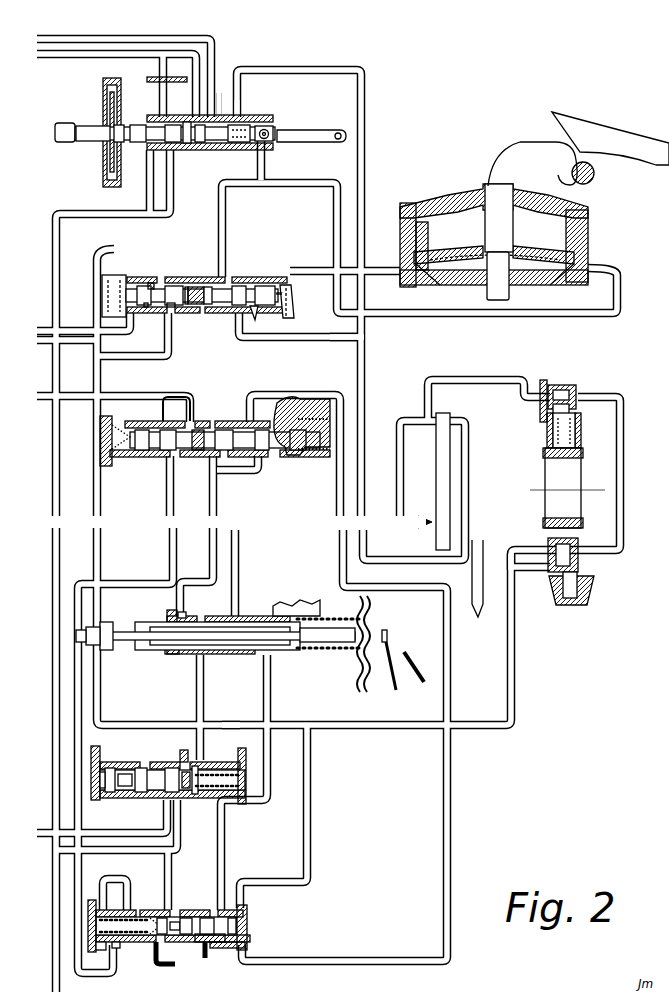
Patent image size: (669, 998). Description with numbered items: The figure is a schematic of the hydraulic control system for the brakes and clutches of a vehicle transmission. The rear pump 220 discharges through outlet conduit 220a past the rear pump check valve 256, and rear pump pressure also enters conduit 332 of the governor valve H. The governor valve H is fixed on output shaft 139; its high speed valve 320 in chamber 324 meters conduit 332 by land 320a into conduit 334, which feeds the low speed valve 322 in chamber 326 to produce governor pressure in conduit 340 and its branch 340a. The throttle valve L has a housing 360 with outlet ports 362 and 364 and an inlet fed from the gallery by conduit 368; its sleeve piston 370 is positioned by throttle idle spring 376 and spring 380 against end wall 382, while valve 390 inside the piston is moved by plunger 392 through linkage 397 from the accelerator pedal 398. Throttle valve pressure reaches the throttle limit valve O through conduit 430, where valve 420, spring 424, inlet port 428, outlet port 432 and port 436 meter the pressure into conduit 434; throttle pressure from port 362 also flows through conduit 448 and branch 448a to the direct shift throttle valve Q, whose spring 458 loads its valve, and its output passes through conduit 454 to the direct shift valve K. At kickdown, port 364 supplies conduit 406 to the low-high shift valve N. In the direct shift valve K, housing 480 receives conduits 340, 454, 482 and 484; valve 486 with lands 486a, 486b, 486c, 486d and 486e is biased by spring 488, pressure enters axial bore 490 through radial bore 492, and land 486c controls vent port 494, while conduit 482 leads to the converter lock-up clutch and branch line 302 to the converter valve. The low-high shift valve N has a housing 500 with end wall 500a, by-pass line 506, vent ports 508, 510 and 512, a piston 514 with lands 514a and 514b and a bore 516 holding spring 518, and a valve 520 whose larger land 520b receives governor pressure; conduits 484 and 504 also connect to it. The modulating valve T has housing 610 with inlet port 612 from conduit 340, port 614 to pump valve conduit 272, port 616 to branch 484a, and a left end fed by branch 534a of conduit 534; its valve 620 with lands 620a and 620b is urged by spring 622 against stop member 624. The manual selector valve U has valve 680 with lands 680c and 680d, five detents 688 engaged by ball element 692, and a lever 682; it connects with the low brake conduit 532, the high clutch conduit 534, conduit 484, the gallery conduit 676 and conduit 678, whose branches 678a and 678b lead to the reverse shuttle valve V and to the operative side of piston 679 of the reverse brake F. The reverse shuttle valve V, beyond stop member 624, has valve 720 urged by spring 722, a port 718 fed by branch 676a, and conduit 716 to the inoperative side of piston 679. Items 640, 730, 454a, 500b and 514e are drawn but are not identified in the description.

The low brake pressure conduit 532 is at (46, 36).
The high clutch pressure conduit 534 is at (90, 50).
The branch conduit 534a is at (82, 328).
The manual selector valve U is at (245, 90).
The gallery pressure conduit 676 is at (318, 72).
The branch conduit 676a is at (346, 338).
The valve 680 is at (56, 122).
The land 680c is at (188, 150).
The land 680d is at (232, 150).
The detents 688 is at (103, 112).
The plate 640 is at (152, 82).
The ball element 692 is at (104, 150).
The port 730 is at (196, 110).
The lever 682 is at (333, 138).
The conduit 678 is at (268, 166).
The branch conduit 678a is at (223, 206).
The branch conduit 678b is at (336, 204).
The low-high shift valve conduit 484 is at (172, 174).
The branch conduit 484a is at (150, 360).
The governor pressure conduit 340 is at (148, 199).
The branch conduit 340a is at (256, 882).
The reverse brake F is at (580, 216).
The piston 679 is at (575, 258).
The modulating valve T is at (140, 275).
The reverse shuttle valve V is at (243, 275).
The housing 610 is at (138, 286).
The inlet port 612 is at (152, 275).
The radial port 614 is at (172, 314).
The radial port 616 is at (188, 318).
The valve 620 is at (112, 290).
The land 620a is at (150, 308).
The land 620b is at (176, 284).
The spring 622 is at (200, 314).
The stop member 624 is at (205, 312).
The conduit 716 is at (296, 270).
The radial port 718 is at (254, 314).
The valve 720 is at (245, 284).
The spring 722 is at (288, 286).
The pump valve conduit 272 is at (92, 343).
The throttle limit valve O is at (143, 410).
The direct shift throttle valve Q is at (283, 405).
The valve 420 is at (150, 458).
The spring 424 is at (108, 462).
The inlet port 428 is at (170, 458).
The throttle valve pressure conduit 430 is at (172, 497).
The outlet port 432 is at (176, 409).
The conduit 434 is at (148, 394).
The port 436 is at (205, 425).
The throttle valve pressure conduit 448 is at (237, 536).
The branch line 448a is at (255, 470).
The conduit 454 is at (306, 394).
The cam follower 454a is at (270, 398).
The spring 458 is at (300, 456).
The conduit 332 is at (506, 380).
The conduit 334 is at (624, 436).
The high speed valve chamber 324 is at (572, 384).
The high speed valve 320 is at (570, 402).
The governor valve H is at (548, 432).
The output shaft 139 is at (546, 496).
The low speed valve chamber 326 is at (580, 548).
The low speed valve 322 is at (588, 578).
The rear pump 220 is at (450, 449).
The outlet conduit 220a is at (400, 478).
The check valve 256 is at (374, 518).
The branch line 302 is at (352, 558).
The conduit 368 is at (238, 552).
The conduit 504 is at (116, 582).
The throttle valve L is at (262, 618).
The housing 360 is at (236, 618).
The outlet port 362 is at (182, 613).
The outlet port 364 is at (270, 656).
The piston 370 is at (150, 647).
The throttle idle spring 376 is at (182, 656).
The spring 380 is at (318, 652).
The housing end wall 382 is at (366, 601).
The valve 390 is at (168, 614).
The plunger 392 is at (336, 618).
The linkage 397 is at (388, 660).
The accelerator pedal 398 is at (414, 652).
The direct shift valve K is at (250, 788).
The kick-down throttle valve pressure conduit 406 is at (272, 715).
The housing 480 is at (108, 800).
The conduit 482 is at (112, 840).
The valve 486 is at (116, 760).
The land 486a is at (112, 796).
The land 486b is at (128, 794).
The land 486c is at (146, 760).
The land 486d is at (174, 760).
The land 486e is at (194, 794).
The spring 488 is at (246, 756).
The axial bore 490 is at (226, 762).
The radial bore 492 is at (210, 760).
The vent port 494 is at (172, 750).
The low-high shift valve N is at (250, 915).
The housing 500 is at (86, 912).
The housing end wall 500a is at (80, 926).
The plug 500b is at (244, 905).
The by-pass line 506 is at (110, 878).
The vent port 508 is at (148, 908).
The vent port 510 is at (182, 908).
The vent port 512 is at (190, 908).
The piston 514 is at (160, 950).
The land 514a is at (120, 940).
The land 514b is at (160, 880).
The port 514e is at (192, 942).
The axial bore 516 is at (100, 932).
The spring 518 is at (100, 950).
The valve 520 is at (240, 951).
The land 520b is at (236, 937).
The land 320a is at (208, 944).